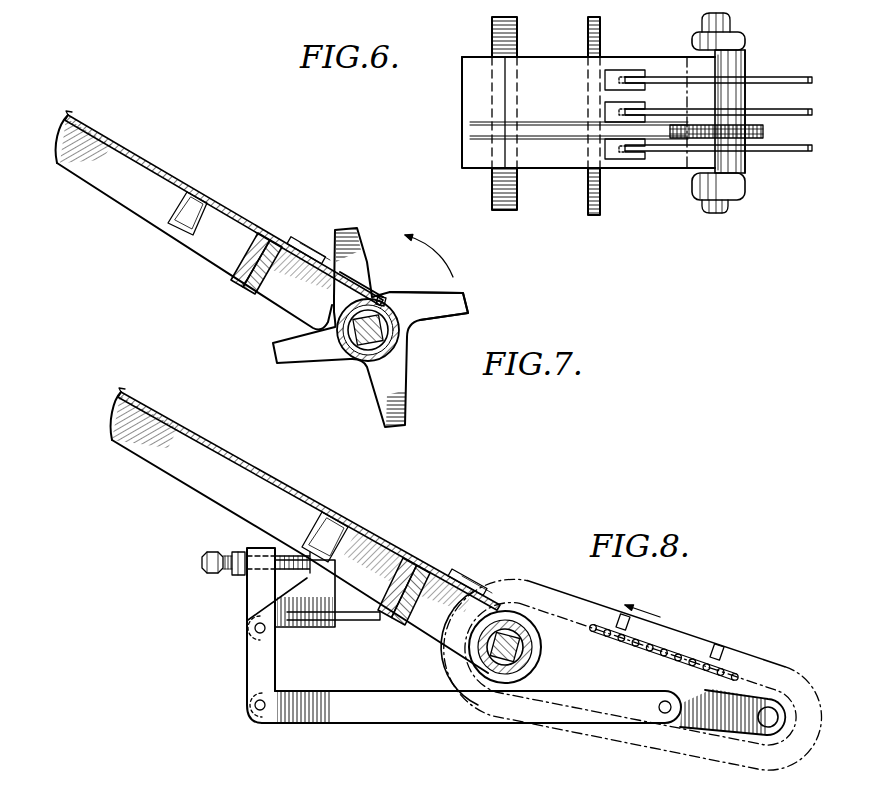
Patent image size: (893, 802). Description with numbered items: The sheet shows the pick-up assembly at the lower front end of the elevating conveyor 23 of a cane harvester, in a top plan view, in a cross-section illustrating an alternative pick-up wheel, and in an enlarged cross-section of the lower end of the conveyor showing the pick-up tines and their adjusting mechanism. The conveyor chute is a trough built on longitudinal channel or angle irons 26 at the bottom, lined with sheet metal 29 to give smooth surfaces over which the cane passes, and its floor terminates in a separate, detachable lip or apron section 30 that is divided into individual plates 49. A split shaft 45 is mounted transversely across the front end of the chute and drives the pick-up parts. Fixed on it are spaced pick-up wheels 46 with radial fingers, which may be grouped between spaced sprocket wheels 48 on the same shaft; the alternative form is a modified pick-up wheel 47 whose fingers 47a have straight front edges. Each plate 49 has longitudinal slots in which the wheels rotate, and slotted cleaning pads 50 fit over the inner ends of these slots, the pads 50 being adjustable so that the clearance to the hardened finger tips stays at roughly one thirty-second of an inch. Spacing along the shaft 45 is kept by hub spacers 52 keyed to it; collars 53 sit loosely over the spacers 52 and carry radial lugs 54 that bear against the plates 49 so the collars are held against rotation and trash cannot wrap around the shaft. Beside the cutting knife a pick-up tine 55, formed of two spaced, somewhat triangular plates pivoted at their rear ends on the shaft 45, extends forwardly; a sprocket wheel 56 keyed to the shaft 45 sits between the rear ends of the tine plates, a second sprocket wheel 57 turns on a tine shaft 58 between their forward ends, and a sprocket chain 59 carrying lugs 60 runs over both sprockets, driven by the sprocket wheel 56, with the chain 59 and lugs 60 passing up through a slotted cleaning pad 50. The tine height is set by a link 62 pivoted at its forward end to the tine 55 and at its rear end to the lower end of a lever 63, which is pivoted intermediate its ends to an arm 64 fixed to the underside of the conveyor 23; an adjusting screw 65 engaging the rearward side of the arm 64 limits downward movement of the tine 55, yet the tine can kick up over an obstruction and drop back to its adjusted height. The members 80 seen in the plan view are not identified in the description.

In FIG. 7, the conveyor 23 is at (219, 220).
In FIG. 8, the conveyor 23 is at (305, 530).
In FIG. 7, the longitudinal channel or angle irons 26 is at (130, 197).
In FIG. 8, the longitudinal channel or angle irons 26 is at (167, 457).
In FIG. 6, the sheet metal 29 is at (470, 108).
In FIG. 7, the sheet metal 29 is at (126, 149).
In FIG. 8, the sheet metal 29 is at (257, 468).
In FIG. 6, the lip or apron section 30 is at (570, 160).
In FIG. 7, the lip or apron section 30 is at (228, 207).
In FIG. 8, the lip or apron section 30 is at (377, 535).
In FIG. 6, the split shaft 45 is at (733, 206).
In FIG. 8, the split shaft 45 is at (533, 665).
In FIG. 6, the pick-up wheels 46 is at (813, 83).
In FIG. 7, the modified pick-up wheel 47 is at (413, 408).
In FIG. 7, the fingers 47a is at (455, 300).
In FIG. 6, the sprocket wheels 48 is at (764, 128).
In FIG. 6, the plates 49 is at (663, 92).
In FIG. 7, the plates 49 is at (370, 280).
In FIG. 6, the cleaning pads 50 is at (607, 107).
In FIG. 7, the cleaning pads 50 is at (292, 240).
In FIG. 8, the cleaning pads 50 is at (453, 573).
In FIG. 6, the hub spacers 52 is at (695, 38).
In FIG. 7, the hub spacers 52 is at (365, 353).
In FIG. 6, the collars 53 is at (747, 53).
In FIG. 6, the lugs 54 is at (720, 68).
In FIG. 7, the lugs 54 is at (395, 302).
In FIG. 7, the pick-up tine 55 is at (407, 343).
In FIG. 8, the pick-up tine 55 is at (730, 693).
In FIG. 8, the sprocket wheel 56 is at (553, 653).
In FIG. 8, the second sprocket wheel 57 is at (722, 735).
In FIG. 8, the tine shaft 58 is at (776, 724).
In FIG. 8, the sprocket chain 59 is at (675, 648).
In FIG. 8, the lugs 60 is at (617, 618).
In FIG. 8, the link 62 is at (430, 712).
In FIG. 8, the lever 63 is at (247, 662).
In FIG. 8, the arm 64 is at (280, 632).
In FIG. 8, the adjusting screw 65 is at (203, 560).
In FIG. 6, the guide wires 80 is at (548, 140).